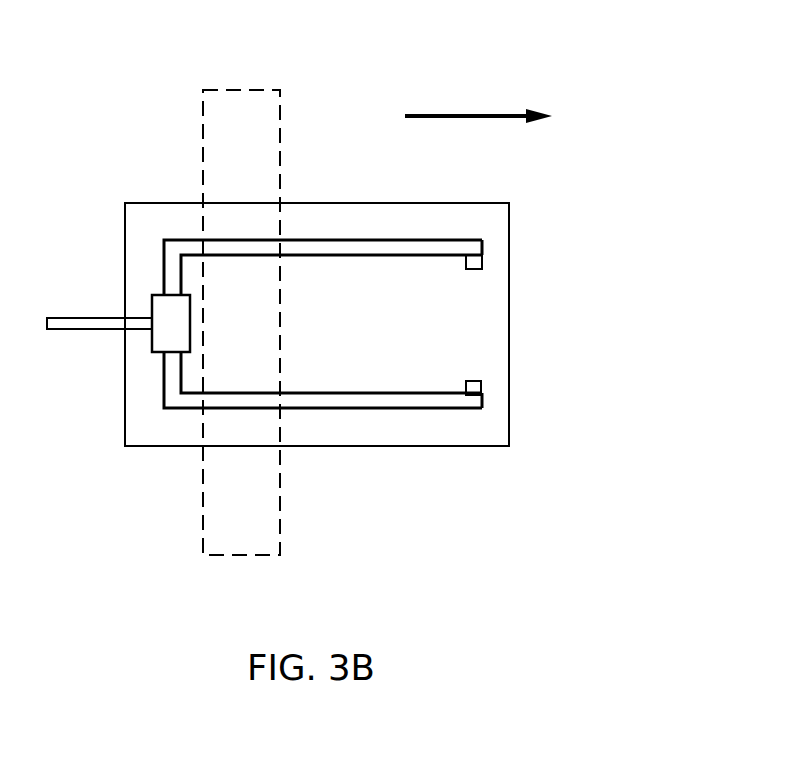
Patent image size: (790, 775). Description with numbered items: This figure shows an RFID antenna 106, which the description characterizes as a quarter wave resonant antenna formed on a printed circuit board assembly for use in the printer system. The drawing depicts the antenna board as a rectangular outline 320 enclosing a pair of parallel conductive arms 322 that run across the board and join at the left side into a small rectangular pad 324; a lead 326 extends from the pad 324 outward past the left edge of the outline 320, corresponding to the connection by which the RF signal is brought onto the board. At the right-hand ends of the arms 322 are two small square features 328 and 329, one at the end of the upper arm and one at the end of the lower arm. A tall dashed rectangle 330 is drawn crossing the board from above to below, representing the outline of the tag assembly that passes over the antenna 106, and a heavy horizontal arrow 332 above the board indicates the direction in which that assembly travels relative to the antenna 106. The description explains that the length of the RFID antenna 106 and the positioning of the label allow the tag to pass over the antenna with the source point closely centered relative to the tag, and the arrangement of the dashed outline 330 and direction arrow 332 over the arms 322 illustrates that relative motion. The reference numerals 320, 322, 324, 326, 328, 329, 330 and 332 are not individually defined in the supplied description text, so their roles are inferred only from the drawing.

The RFID antenna 106 is at (514, 449).
The electrode structure region 320 is at (512, 401).
The electrode arms 322 is at (343, 236).
The contact pad 324 is at (159, 306).
The lead 326 is at (58, 335).
The first electrode tip 328 is at (486, 259).
The second electrode tip 329 is at (486, 377).
The scan region 330 is at (283, 524).
The scan direction 332 is at (445, 104).